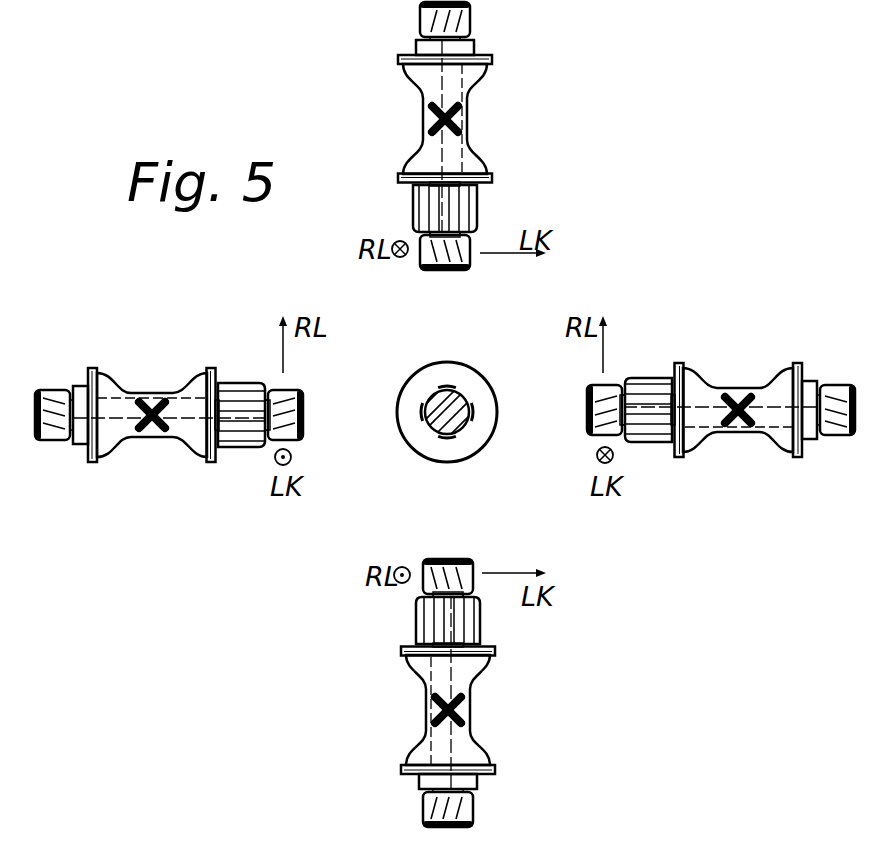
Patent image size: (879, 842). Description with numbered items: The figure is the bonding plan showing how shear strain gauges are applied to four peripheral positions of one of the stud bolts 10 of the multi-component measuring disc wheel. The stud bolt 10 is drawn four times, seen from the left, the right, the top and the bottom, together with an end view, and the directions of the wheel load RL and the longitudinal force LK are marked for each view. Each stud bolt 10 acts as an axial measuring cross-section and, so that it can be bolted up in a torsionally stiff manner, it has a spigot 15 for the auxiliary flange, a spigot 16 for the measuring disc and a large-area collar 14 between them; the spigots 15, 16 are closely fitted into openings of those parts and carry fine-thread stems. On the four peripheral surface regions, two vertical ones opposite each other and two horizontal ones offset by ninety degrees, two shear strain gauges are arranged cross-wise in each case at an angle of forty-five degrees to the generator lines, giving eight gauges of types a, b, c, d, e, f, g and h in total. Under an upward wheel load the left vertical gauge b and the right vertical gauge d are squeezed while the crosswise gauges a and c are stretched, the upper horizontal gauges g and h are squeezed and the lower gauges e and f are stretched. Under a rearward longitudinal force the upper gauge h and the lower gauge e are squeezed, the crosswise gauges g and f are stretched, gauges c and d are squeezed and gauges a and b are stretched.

The stud bolt 10 is at (412, 144).
The collar 14 is at (399, 54).
The spigot 15 is at (462, 47).
The spigot 16 is at (472, 196).
The shear strain gauge a is at (731, 398).
The shear strain gauge b is at (749, 399).
The shear strain gauge c is at (161, 401).
The shear strain gauge d is at (144, 401).
The shear strain gauge e is at (462, 101).
The shear strain gauge f is at (462, 126).
The shear strain gauge g is at (452, 703).
The shear strain gauge h is at (457, 720).